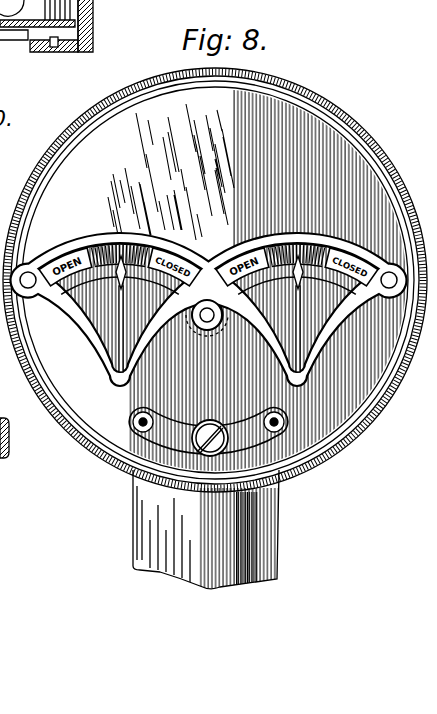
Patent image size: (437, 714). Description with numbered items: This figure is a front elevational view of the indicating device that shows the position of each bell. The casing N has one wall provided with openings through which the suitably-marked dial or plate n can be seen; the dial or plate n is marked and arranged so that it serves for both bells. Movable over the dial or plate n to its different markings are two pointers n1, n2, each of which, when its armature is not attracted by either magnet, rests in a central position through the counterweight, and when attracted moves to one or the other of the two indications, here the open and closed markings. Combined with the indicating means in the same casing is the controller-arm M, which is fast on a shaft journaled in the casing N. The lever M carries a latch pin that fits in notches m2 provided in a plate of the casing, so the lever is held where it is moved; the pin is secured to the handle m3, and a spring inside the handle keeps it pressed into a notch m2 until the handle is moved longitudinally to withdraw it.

The casing N is at (136, 80).
The dial or plate n is at (80, 309).
The pointer n1 is at (124, 338).
The pointer n2 is at (298, 347).
The controller-arm M is at (207, 340).
The notches m2 is at (142, 427).
The handle m3 is at (5, 459).